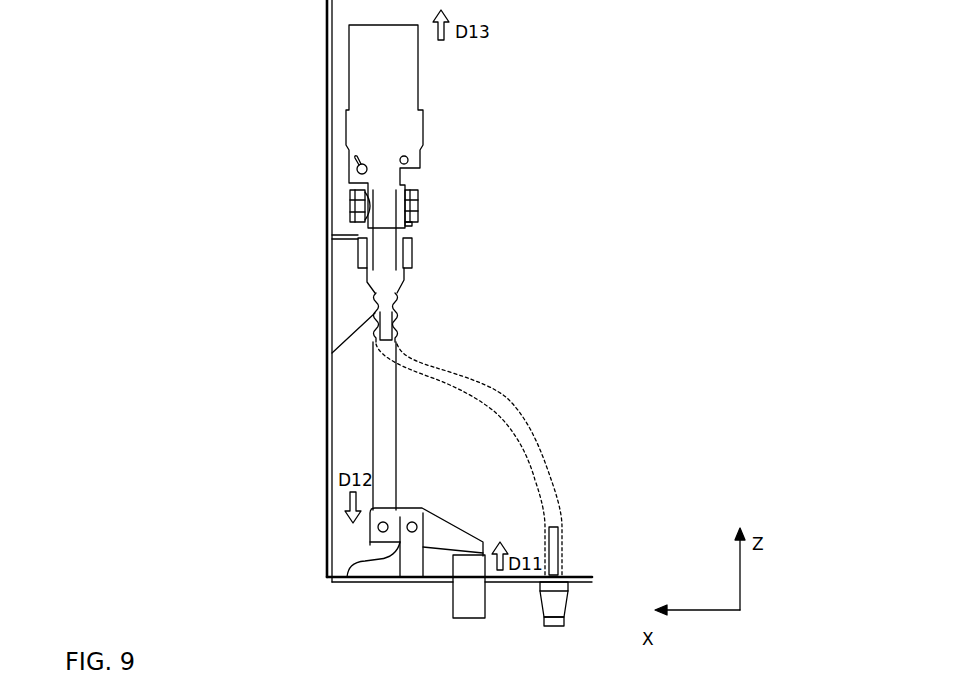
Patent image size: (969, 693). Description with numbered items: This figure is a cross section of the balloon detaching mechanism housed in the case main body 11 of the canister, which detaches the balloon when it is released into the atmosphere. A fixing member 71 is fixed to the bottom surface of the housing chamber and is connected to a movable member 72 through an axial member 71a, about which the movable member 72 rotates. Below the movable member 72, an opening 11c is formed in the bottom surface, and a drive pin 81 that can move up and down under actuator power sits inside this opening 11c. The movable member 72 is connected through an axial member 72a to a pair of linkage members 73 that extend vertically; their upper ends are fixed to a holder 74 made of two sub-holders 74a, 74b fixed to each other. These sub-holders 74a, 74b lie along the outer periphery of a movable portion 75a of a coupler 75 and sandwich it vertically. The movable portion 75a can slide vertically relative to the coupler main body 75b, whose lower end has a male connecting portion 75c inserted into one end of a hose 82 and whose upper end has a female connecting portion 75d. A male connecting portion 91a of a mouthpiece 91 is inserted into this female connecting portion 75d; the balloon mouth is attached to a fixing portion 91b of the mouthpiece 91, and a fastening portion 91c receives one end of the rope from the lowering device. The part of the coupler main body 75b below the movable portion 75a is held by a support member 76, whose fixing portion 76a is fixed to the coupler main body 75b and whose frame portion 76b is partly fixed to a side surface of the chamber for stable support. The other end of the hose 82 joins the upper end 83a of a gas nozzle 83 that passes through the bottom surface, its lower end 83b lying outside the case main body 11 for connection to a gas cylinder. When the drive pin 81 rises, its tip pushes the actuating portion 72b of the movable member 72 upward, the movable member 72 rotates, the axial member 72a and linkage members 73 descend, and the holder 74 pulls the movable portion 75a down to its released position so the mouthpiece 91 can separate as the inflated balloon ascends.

The case main body 11 is at (330, 397).
The opening 11c is at (443, 582).
The fixing member 71 is at (383, 568).
The axial member 71a is at (408, 512).
The movable member 72 is at (450, 510).
The axial member 72a is at (370, 533).
The actuating portion 72b is at (463, 547).
The linkage member 73 is at (397, 412).
The holder 74 is at (516, 175).
The sub-holder 74a is at (419, 196).
The sub-holder 74b is at (419, 212).
The coupler 75 is at (416, 183).
The movable portion 75a is at (412, 223).
The coupler main body 75b is at (360, 260).
The male connecting portion 75c is at (399, 323).
The female connecting portion 75d is at (358, 237).
The support member 76 is at (353, 348).
The fixing portion 76a is at (413, 252).
The frame portion 76b is at (345, 293).
The drive pin 81 is at (480, 592).
The hose 82 is at (520, 413).
The gas nozzle 83 is at (572, 601).
The upper end 83a is at (553, 550).
The lower end 83b is at (558, 600).
The mouthpiece 91 is at (430, 88).
The male connecting portion 91a is at (352, 204).
The fixing portion 91b is at (363, 72).
The fastening portion 91c is at (407, 155).